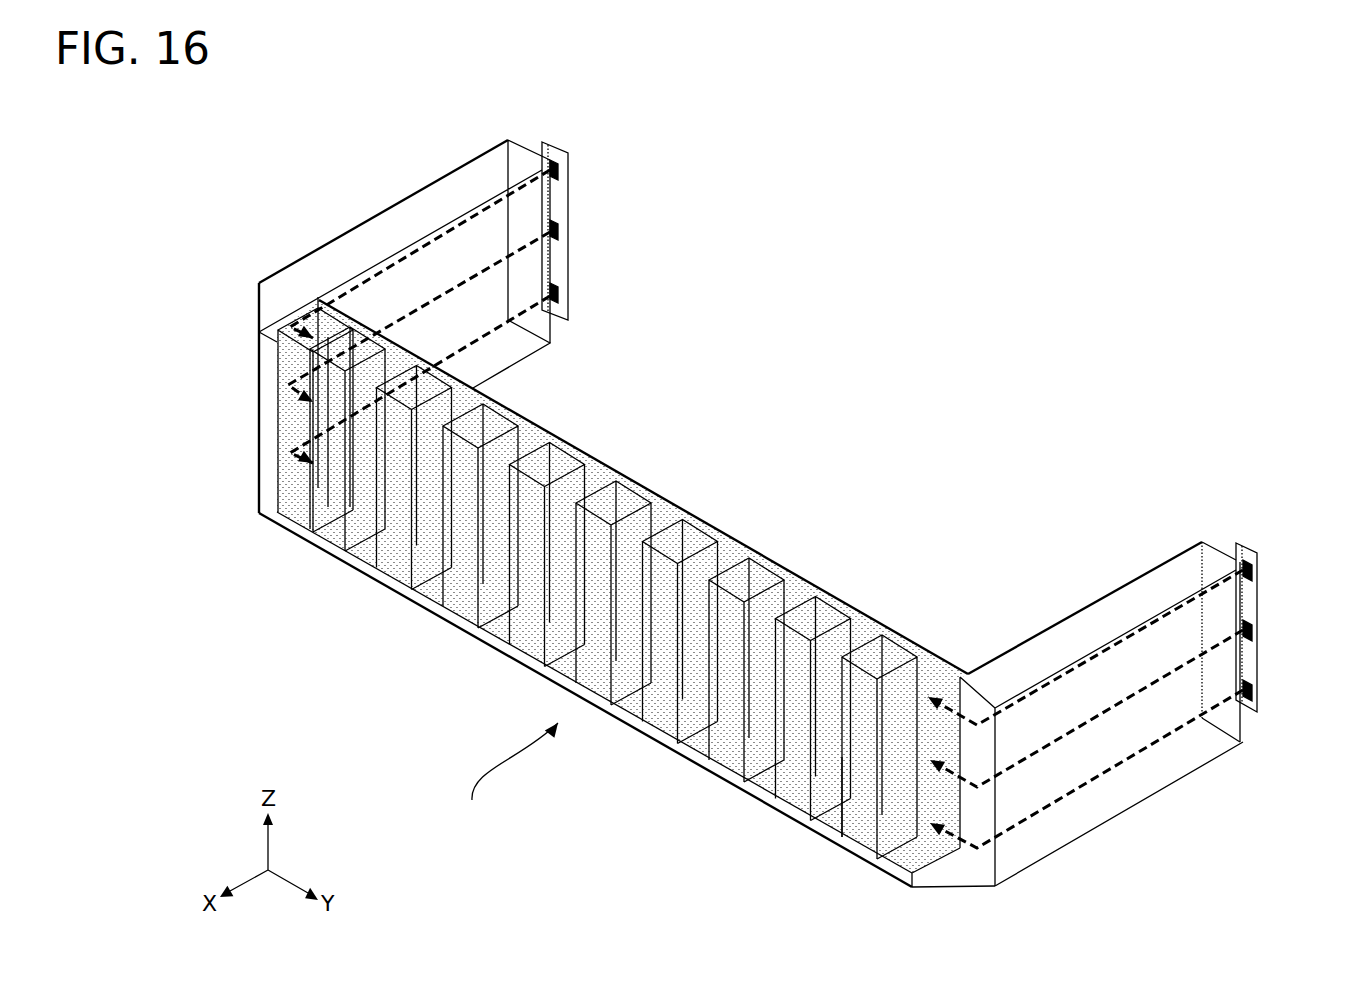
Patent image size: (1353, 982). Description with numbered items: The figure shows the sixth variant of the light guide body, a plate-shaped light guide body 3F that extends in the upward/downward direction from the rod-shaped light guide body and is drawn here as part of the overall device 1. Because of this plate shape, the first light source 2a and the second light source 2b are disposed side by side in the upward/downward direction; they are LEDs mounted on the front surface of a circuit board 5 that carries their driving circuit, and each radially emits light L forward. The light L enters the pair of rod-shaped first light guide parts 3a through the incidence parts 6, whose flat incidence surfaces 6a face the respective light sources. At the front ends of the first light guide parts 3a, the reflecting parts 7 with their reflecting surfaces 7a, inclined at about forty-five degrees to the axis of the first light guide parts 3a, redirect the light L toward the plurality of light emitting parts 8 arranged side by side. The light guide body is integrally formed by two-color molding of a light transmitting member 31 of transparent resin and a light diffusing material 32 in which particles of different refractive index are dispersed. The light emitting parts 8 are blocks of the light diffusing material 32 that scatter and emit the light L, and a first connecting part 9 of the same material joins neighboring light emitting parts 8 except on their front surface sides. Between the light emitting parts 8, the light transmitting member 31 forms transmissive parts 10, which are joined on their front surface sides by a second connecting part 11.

The optical device 1 is at (762, 527).
The first light source 2a is at (555, 222).
The second light source 2b is at (1254, 570).
The first light guide part 3a is at (362, 243).
The light guide body 3F is at (508, 778).
The circuit board 5 is at (563, 155).
The incidence part 6 is at (904, 603).
The incidence surface 6a is at (537, 322).
The reflecting part 7 is at (632, 612).
The reflecting surface 7a is at (258, 432).
The light emitting part 8 is at (830, 818).
The first connecting part 9 is at (888, 662).
The transmissive part 10 is at (823, 622).
The second connecting part 11 is at (832, 838).
The light transmitting member 31 is at (650, 740).
The light diffusing material 32 is at (636, 636).
The light L is at (357, 282).